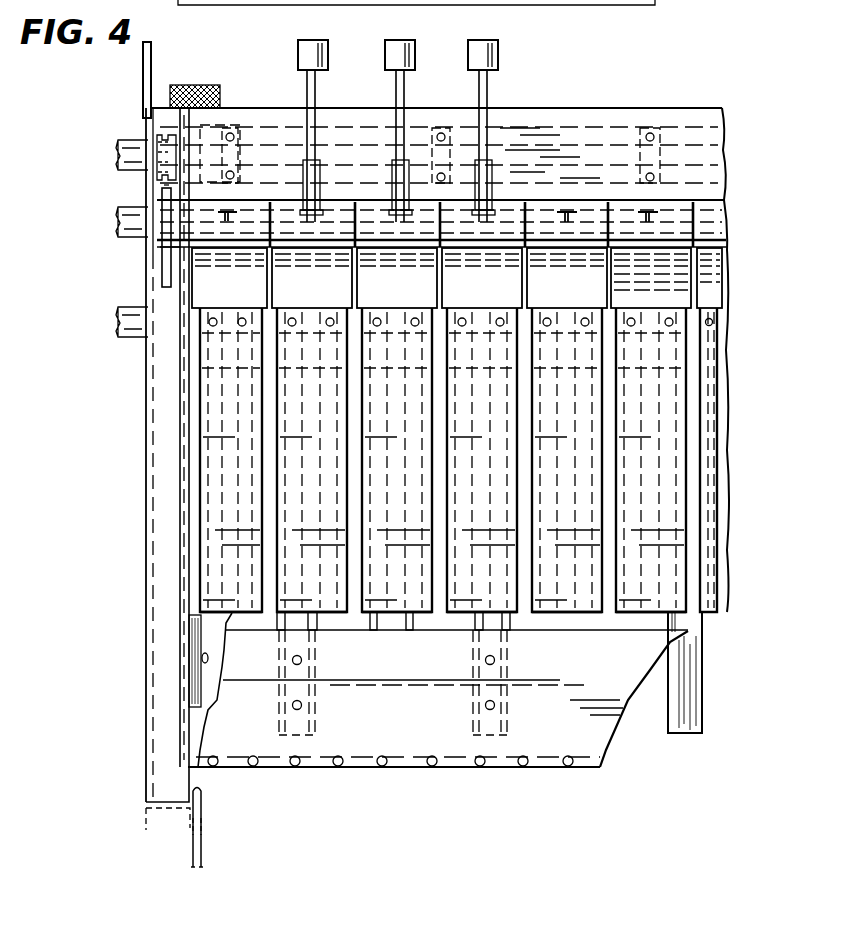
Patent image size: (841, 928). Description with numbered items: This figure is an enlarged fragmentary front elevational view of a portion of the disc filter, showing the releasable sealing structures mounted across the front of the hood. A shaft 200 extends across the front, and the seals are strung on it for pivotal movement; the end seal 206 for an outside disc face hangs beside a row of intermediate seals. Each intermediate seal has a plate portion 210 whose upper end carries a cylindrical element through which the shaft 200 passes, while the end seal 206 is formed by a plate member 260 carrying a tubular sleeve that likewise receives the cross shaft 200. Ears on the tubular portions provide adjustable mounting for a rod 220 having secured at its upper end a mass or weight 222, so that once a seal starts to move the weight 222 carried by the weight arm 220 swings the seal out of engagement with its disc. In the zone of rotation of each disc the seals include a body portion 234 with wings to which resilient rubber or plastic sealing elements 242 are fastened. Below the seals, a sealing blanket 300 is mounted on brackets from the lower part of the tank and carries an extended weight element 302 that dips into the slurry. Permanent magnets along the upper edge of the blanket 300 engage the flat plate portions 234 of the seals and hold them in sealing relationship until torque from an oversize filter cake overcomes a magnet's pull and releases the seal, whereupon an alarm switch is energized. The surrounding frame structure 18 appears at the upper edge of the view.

The header beam 18 is at (671, 108).
The shaft 200 is at (162, 246).
The rod 220 is at (480, 90).
The weight 222 is at (475, 42).
The plate member 260 is at (210, 302).
The plate portion 210 is at (284, 302).
The swingable seal 206 is at (192, 549).
The sealing element 242 is at (372, 604).
The body portion 234 is at (393, 604).
The weight element 302 is at (316, 768).
The sealing blanket 300 is at (394, 760).